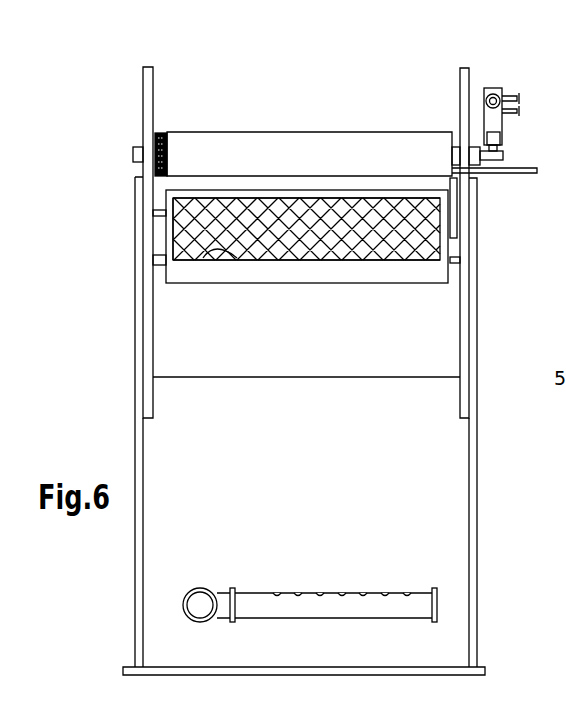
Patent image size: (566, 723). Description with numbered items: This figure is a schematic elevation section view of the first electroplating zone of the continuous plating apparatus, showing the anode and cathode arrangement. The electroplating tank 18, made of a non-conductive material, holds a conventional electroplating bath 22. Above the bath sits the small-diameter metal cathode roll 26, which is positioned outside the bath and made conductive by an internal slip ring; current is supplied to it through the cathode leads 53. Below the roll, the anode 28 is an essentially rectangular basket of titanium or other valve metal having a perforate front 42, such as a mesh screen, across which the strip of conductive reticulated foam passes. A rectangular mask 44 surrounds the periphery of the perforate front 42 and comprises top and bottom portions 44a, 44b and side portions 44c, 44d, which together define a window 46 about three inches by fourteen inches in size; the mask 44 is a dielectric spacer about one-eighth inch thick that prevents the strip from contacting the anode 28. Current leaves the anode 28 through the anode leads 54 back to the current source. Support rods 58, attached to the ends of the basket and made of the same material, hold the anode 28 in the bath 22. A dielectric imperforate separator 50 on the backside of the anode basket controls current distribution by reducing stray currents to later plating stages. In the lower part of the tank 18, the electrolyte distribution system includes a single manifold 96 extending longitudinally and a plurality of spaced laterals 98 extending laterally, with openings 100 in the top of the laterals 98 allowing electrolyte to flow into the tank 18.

The electroplating tank 18 is at (472, 483).
The electroplating bath 22 is at (180, 458).
The cathode roll 26 is at (225, 145).
The anode 28 is at (167, 275).
The perforate front 42 is at (368, 240).
The mask 44 is at (303, 246).
The top portion 44a is at (303, 195).
The bottom portion 44b is at (353, 273).
The side portion 44c is at (172, 231).
The side portion 44d is at (447, 240).
The window 46 is at (237, 247).
The separator 50 is at (273, 355).
The cathode leads 53 is at (493, 88).
The anode leads 54 is at (503, 174).
The support rods 58 is at (453, 262).
The manifold 96 is at (200, 602).
The laterals 98 is at (310, 587).
The openings 100 is at (340, 595).